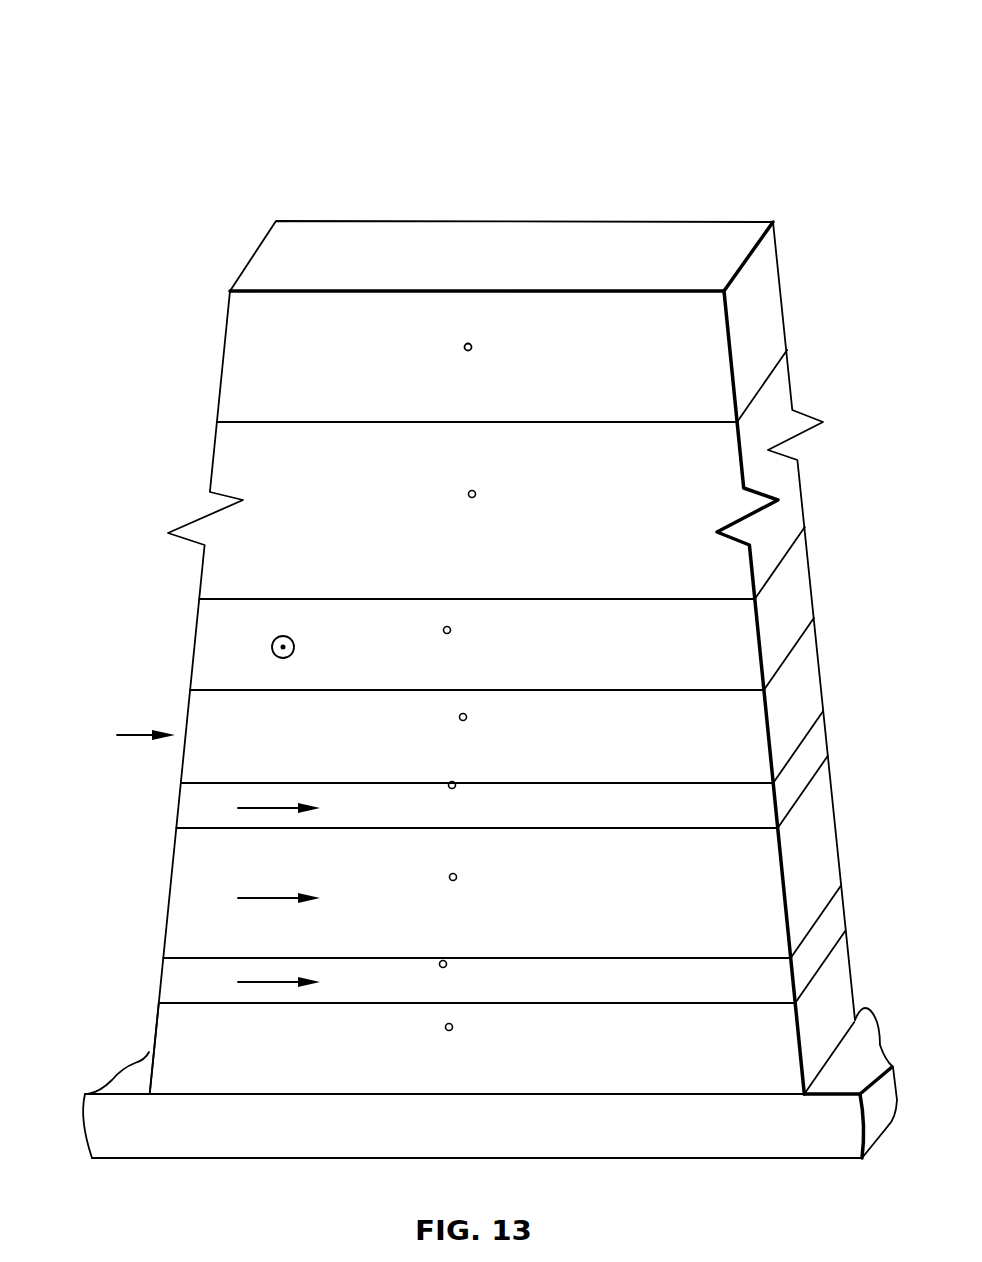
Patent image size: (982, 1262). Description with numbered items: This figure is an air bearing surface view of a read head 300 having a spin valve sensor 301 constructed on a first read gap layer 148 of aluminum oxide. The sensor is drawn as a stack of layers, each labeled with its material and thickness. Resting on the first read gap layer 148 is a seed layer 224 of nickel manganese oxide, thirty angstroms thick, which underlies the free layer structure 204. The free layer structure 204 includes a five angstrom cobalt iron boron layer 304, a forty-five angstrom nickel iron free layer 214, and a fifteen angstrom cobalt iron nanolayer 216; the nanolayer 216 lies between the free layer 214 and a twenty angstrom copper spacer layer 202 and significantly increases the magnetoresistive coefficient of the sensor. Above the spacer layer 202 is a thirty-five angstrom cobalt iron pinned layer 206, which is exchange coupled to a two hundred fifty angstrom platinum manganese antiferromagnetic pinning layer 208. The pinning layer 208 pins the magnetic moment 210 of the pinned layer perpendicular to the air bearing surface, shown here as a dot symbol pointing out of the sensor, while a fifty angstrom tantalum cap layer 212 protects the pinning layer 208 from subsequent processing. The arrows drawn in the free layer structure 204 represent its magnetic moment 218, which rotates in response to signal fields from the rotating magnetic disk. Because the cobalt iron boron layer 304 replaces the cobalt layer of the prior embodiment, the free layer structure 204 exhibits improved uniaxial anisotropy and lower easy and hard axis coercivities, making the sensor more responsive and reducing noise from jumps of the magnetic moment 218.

The read head 300 is at (765, 150).
The spin valve sensor 301 is at (72, 1094).
The free layer structure 204 is at (152, 1003).
The cap layer 212 is at (657, 397).
The antiferromagnetic pinning layer 208 is at (657, 530).
The pinned layer 206 is at (657, 668).
The nonmagnetic conductive spacer layer 202 is at (657, 753).
The nanolayer 216 is at (657, 818).
The free layer 214 is at (657, 912).
The cobalt iron boron layer 304 is at (657, 993).
The seed layer 224 is at (657, 1057).
The first read gap layer 148 is at (657, 1135).
The magnetic moment of the pinned layer 210 is at (272, 647).
The magnetic moment of the free layer structure 218 is at (268, 808).